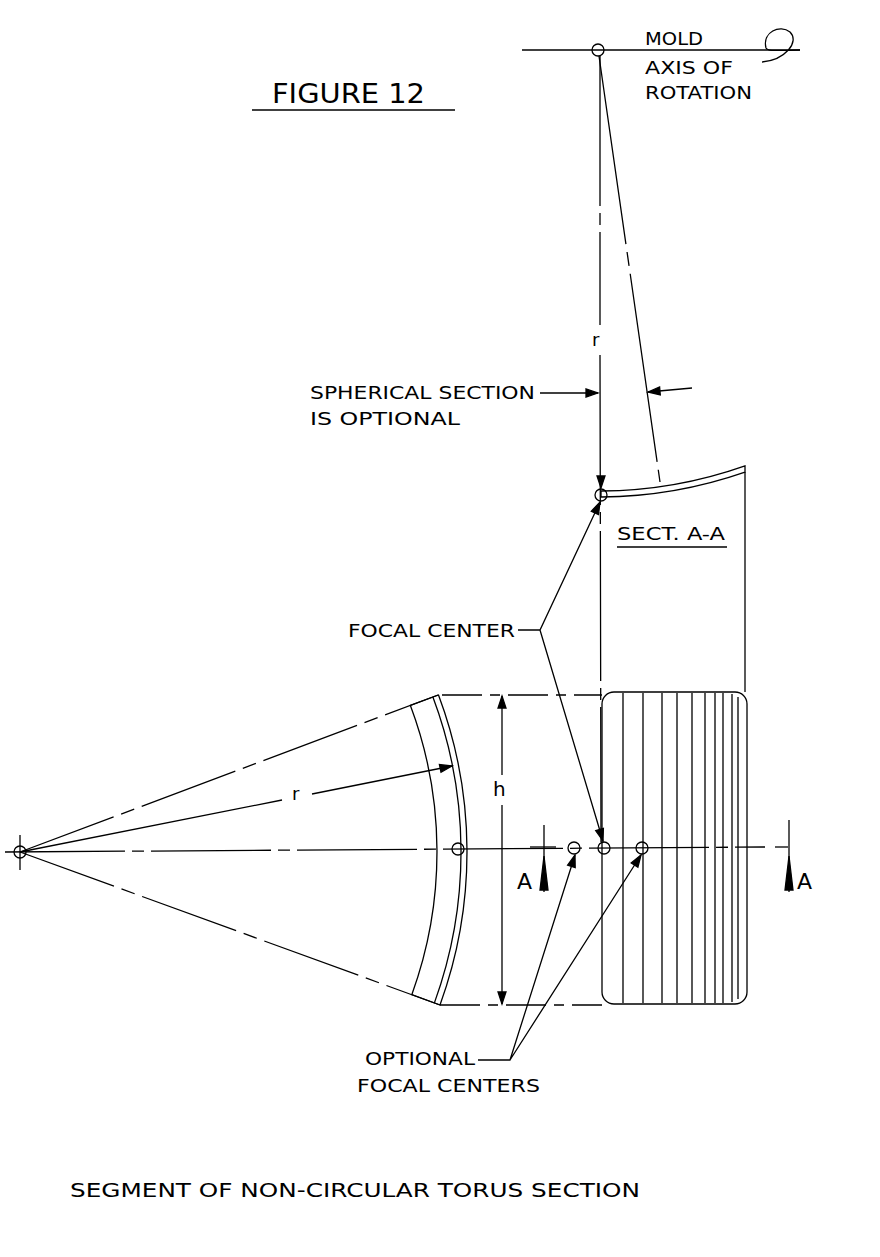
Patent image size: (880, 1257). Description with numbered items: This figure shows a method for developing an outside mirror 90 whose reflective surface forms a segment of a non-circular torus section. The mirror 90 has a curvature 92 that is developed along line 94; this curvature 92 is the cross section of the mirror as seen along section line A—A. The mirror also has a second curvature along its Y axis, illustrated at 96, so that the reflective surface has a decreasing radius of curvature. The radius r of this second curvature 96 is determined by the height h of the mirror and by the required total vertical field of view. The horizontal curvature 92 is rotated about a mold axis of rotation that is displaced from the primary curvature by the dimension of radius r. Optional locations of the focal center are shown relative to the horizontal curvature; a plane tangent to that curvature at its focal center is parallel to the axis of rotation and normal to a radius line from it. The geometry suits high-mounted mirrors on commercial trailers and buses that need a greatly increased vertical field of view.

The mirror 90 is at (748, 710).
The curvature 92 is at (697, 486).
The line 94 is at (757, 847).
The second curvature 96 is at (452, 906).